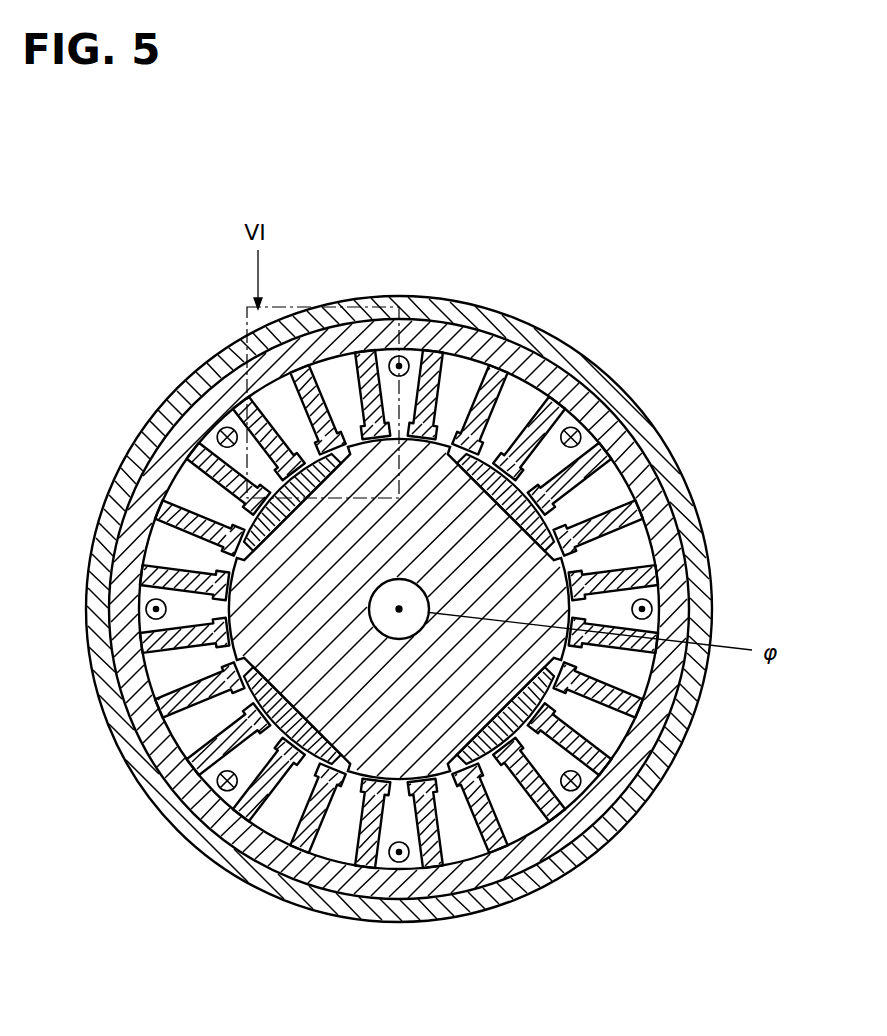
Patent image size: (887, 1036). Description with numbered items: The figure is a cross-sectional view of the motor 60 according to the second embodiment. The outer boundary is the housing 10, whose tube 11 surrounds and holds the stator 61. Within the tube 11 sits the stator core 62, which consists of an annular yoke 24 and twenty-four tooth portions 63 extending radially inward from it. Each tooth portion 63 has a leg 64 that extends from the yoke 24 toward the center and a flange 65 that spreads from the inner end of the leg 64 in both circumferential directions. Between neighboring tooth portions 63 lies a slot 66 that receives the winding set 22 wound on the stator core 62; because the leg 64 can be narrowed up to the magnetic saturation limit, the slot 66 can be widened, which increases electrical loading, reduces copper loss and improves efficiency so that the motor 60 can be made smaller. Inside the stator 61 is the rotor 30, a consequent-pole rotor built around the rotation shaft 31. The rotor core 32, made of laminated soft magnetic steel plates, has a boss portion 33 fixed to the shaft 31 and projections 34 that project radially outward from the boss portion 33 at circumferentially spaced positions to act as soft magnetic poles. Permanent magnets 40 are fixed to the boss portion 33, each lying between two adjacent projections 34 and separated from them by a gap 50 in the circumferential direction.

The housing 10 is at (131, 445).
The tube 11 is at (145, 502).
The winding set 22 is at (400, 438).
The yoke 24 is at (302, 350).
The rotor 30 is at (693, 553).
The rotation shaft 31 is at (428, 618).
The rotor core 32 is at (440, 970).
The boss portion 33 is at (374, 880).
The projections 34 is at (462, 373).
The permanent magnets 40 is at (576, 432).
The gap 50 is at (280, 445).
The motor 60 is at (152, 331).
The stator 61 is at (660, 456).
The stator core 62 is at (360, 222).
The tooth portions 63 is at (272, 493).
The leg 64 is at (330, 450).
The flange 65 is at (343, 462).
The slot 66 is at (437, 418).